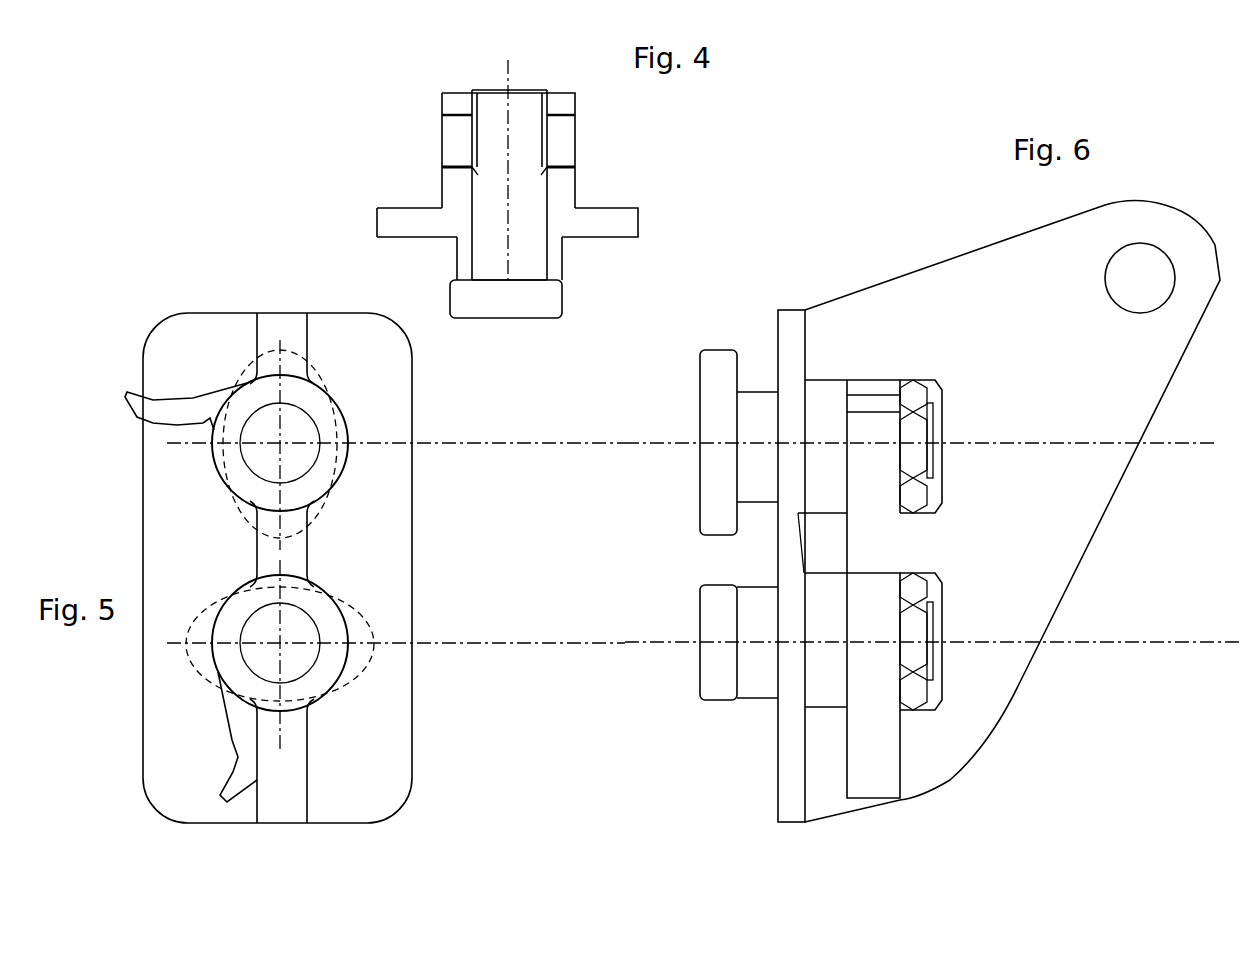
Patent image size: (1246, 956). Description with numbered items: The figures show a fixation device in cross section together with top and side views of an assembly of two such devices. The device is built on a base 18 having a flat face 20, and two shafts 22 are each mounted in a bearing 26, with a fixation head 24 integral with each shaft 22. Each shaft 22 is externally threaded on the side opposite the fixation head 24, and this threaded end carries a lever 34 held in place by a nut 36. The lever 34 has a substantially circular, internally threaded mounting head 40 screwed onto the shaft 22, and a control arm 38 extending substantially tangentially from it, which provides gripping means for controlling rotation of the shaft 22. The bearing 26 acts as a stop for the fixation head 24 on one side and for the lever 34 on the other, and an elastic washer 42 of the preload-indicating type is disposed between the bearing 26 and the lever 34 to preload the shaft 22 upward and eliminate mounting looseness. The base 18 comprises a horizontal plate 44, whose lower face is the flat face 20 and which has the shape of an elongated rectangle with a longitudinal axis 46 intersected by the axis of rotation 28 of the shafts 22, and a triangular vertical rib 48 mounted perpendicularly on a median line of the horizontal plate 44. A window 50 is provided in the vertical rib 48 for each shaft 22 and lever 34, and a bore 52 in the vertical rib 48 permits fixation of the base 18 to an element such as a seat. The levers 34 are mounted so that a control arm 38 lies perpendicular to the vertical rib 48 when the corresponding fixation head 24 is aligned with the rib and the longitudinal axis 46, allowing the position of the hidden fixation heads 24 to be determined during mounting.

In FIG. 4, the base 18 is at (606, 212).
In FIG. 5, the base 18 is at (422, 788).
In FIG. 6, the base 18 is at (858, 303).
In FIG. 4, the flat face 20 is at (610, 240).
In FIG. 6, the flat face 20 is at (776, 767).
In FIG. 4, the shaft 22 is at (494, 92).
In FIG. 6, the shaft 22 is at (933, 420).
In FIG. 5, the fixation head 24 is at (338, 380).
In FIG. 6, the fixation head 24 is at (704, 385).
In FIG. 4, the bearing 26 is at (572, 183).
In FIG. 6, the bearing 26 is at (760, 592).
In FIG. 4, the axis of rotation 28 is at (512, 63).
In FIG. 5, the axis of rotation 28 is at (276, 450).
In FIG. 4, the lever 34 is at (444, 152).
In FIG. 6, the lever 34 is at (875, 592).
In FIG. 4, the nut 36 is at (446, 90).
In FIG. 6, the nut 36 is at (912, 385).
In FIG. 5, the control arm 38 is at (196, 396).
In FIG. 6, the control arm 38 is at (878, 402).
In FIG. 5, the mounting head 40 is at (331, 412).
In FIG. 4, the elastic washer 42 is at (443, 173).
In FIG. 5, the horizontal plate 44 is at (405, 500).
In FIG. 6, the horizontal plate 44 is at (785, 320).
In FIG. 5, the longitudinal axis 46 is at (285, 733).
In FIG. 6, the vertical rib 48 is at (957, 263).
In FIG. 6, the window 50 is at (945, 490).
In FIG. 6, the bore 52 is at (1140, 313).